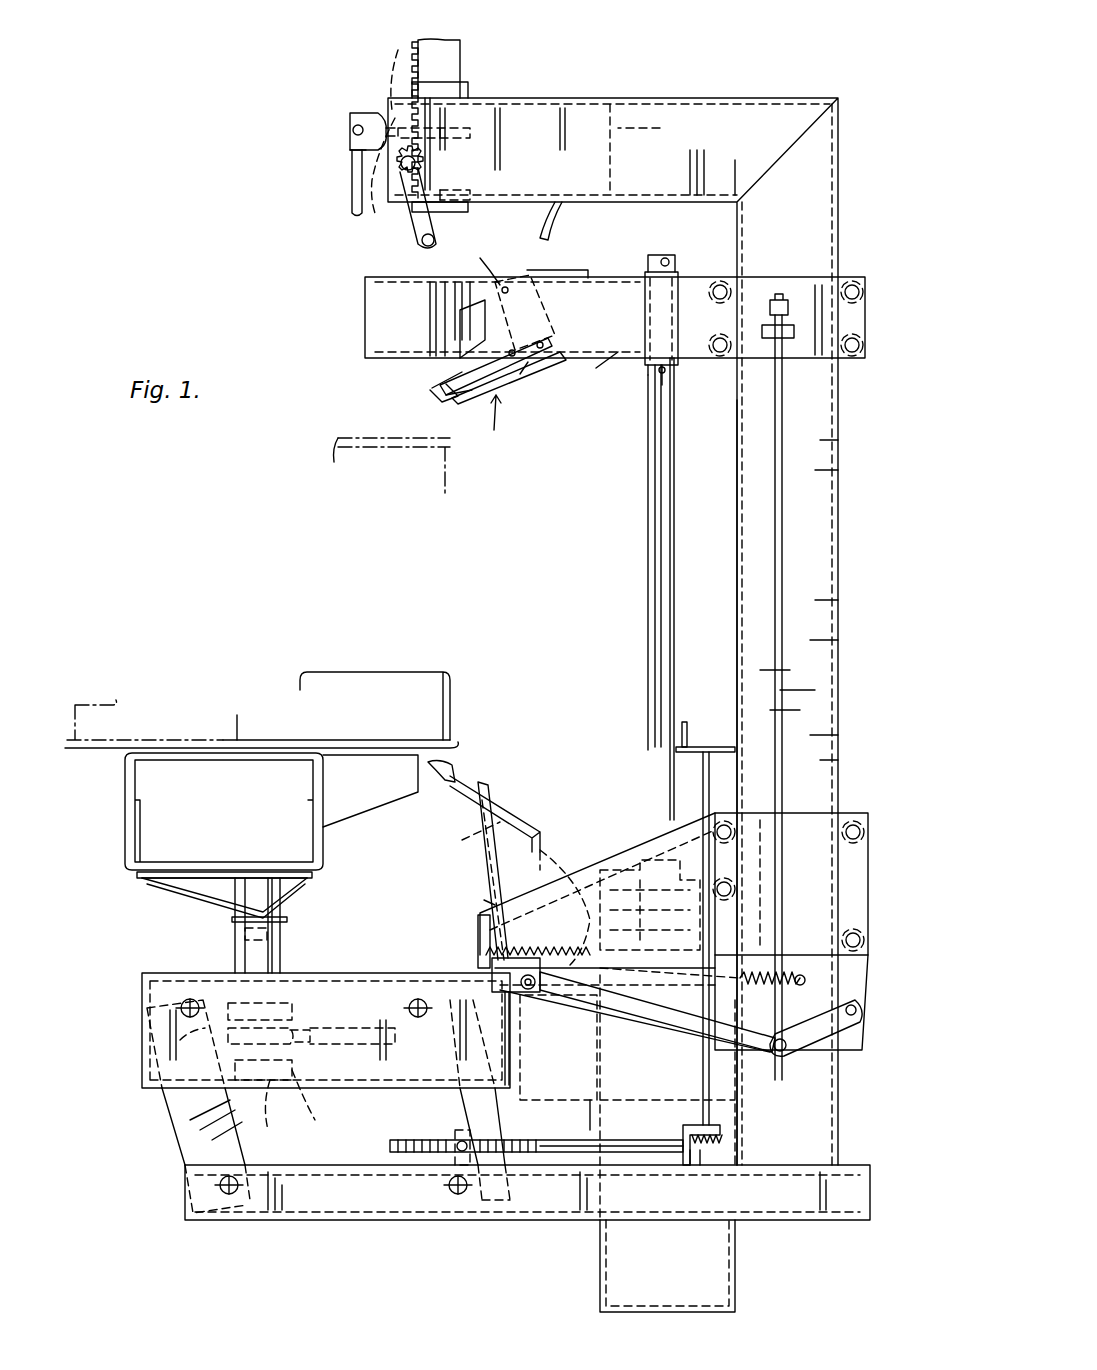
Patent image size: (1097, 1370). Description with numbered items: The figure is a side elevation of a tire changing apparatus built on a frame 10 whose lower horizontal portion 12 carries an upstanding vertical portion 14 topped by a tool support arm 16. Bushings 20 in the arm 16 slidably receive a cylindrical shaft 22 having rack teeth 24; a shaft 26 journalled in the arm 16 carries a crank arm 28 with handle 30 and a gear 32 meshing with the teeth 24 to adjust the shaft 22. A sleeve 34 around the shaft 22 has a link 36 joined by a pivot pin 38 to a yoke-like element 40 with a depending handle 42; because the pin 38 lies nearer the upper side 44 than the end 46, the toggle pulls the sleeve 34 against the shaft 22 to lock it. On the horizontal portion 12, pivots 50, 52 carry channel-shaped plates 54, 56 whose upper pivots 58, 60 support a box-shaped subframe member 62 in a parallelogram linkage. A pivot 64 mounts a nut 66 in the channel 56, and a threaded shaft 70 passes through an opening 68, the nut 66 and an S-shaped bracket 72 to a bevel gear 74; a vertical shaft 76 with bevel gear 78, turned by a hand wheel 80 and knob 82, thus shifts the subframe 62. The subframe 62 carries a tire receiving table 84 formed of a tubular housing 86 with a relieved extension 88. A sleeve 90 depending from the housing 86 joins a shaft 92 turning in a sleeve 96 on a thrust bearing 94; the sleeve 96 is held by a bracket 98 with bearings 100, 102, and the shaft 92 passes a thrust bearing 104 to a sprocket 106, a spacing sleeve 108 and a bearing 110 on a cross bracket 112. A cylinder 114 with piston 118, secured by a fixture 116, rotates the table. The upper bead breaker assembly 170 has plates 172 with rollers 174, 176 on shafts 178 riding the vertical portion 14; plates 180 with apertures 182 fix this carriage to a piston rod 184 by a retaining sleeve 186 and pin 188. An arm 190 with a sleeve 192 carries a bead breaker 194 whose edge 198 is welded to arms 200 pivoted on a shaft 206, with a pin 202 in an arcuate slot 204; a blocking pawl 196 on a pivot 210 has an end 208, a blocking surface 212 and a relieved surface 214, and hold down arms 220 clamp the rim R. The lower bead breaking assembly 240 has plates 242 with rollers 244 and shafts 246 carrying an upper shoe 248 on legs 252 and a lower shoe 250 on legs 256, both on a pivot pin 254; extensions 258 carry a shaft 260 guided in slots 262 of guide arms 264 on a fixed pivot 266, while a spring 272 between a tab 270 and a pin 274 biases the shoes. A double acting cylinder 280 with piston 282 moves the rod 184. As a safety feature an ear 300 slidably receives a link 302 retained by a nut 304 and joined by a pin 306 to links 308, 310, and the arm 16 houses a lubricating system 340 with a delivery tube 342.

The frame 10 is at (857, 1141).
The lower horizontal frame portion 12 is at (284, 1222).
The vertical frame portion 14 is at (822, 588).
The tool support arm 16 is at (588, 122).
The bushings 20 is at (462, 88).
The shaft 22 is at (458, 60).
The rack teeth 24 is at (418, 42).
The shaft 26 is at (424, 165).
The crank arm 28 is at (410, 232).
The operating handle 30 is at (422, 246).
The gear 32 is at (372, 220).
The sleeve 34 is at (472, 132).
The link 36 is at (396, 50).
The pivot pin 38 is at (352, 130).
The yoke-like element 40 is at (350, 150).
The handle 42 is at (352, 186).
The upper side 44 is at (362, 115).
The end 46 is at (388, 128).
The first pivot 50 is at (234, 1196).
The second pivot 52 is at (460, 1196).
The channel-shaped plate 54 is at (178, 1120).
The channel-shaped plate 56 is at (490, 1125).
The pivot 58 is at (180, 1004).
The pivot 60 is at (418, 998).
The subframe member 62 is at (376, 980).
The pivot 64 is at (460, 1154).
The nut 66 is at (450, 1130).
The opening 68 is at (464, 1138).
The threaded shaft 70 is at (560, 1160).
The supporting bracket 72 is at (700, 1222).
The bevel gear 74 is at (700, 1160).
The vertical shaft 76 is at (712, 778).
The bevel gear 78 is at (724, 1140).
The hand wheel 80 is at (708, 746).
The gripping knob 82 is at (683, 722).
The tire receiving table 84 is at (114, 856).
The tubular frame work 86 is at (125, 793).
The relieved extension 88 is at (388, 800).
The sleeve 90 is at (240, 894).
The shaft 92 is at (282, 898).
The thrust bearing 94 is at (288, 920).
The sleeve 96 is at (282, 945).
The bracket 98 is at (292, 1008).
The bearing 100 is at (296, 1030).
The bearing 102 is at (245, 932).
The thrust bearing 104 is at (215, 1035).
The sprocket 106 is at (318, 1044).
The spacing sleeve 108 is at (294, 1070).
The bearing 110 is at (280, 1115).
The cross bracket 112 is at (324, 1096).
The cylinder 114 is at (594, 1100).
The fixture 116 is at (560, 1047).
The piston 118 is at (596, 1040).
The upper bead breaker assembly 170 is at (496, 436).
The plates 172 is at (840, 272).
The rollers 174 is at (742, 268).
The rollers 176 is at (862, 284).
The shafts 178 is at (728, 288).
The plates 180 is at (676, 280).
The apertures 182 is at (652, 268).
The piston rod 184 is at (655, 482).
The retaining sleeve 186 is at (676, 256).
The retaining pin 188 is at (648, 430).
The arm 190 is at (568, 256).
The sleeve 192 is at (660, 345).
The bead breaker 194 is at (462, 404).
The blocking pawl 196 is at (455, 372).
The bead breaking edge 198 is at (440, 400).
The arms 200 is at (568, 340).
The pin 202 is at (541, 341).
The arcuate slot 204 is at (519, 411).
The shaft 206 is at (500, 285).
The pawl end 208 is at (432, 388).
The pivot 210 is at (511, 350).
The blocking surface 212 is at (528, 364).
The relieved surface 214 is at (538, 312).
The hold down arms 220 is at (385, 322).
The lower bead breaking assembly 240 is at (554, 804).
The plates 242 is at (862, 870).
The rollers 244 is at (735, 822).
The shafts 246 is at (732, 832).
The upper bead breaking shoe 248 is at (462, 770).
The lower bead breaking shoe 250 is at (478, 790).
The legs 252 is at (544, 845).
The pivot pin 254 is at (490, 900).
The legs 256 is at (460, 837).
The downward extension 258 is at (565, 907).
The shaft 260 is at (545, 990).
The elongated slots 262 is at (505, 1000).
The guide arms 264 is at (848, 990).
The fixed pivot 266 is at (858, 1012).
The apertured tab 270 is at (478, 928).
The spring 272 is at (740, 992).
The pin 274 is at (802, 972).
The double acting cylinder 280 is at (740, 1280).
The piston 282 is at (620, 920).
The apertured ear 300 is at (786, 338).
The link 302 is at (786, 492).
The nut 304 is at (782, 296).
The pin 306 is at (784, 1054).
The link 308 is at (850, 1030).
The link 310 is at (674, 1048).
The lubricating system 340 is at (626, 133).
The lubricant delivery tube 342 is at (560, 222).
The rim R is at (450, 447).